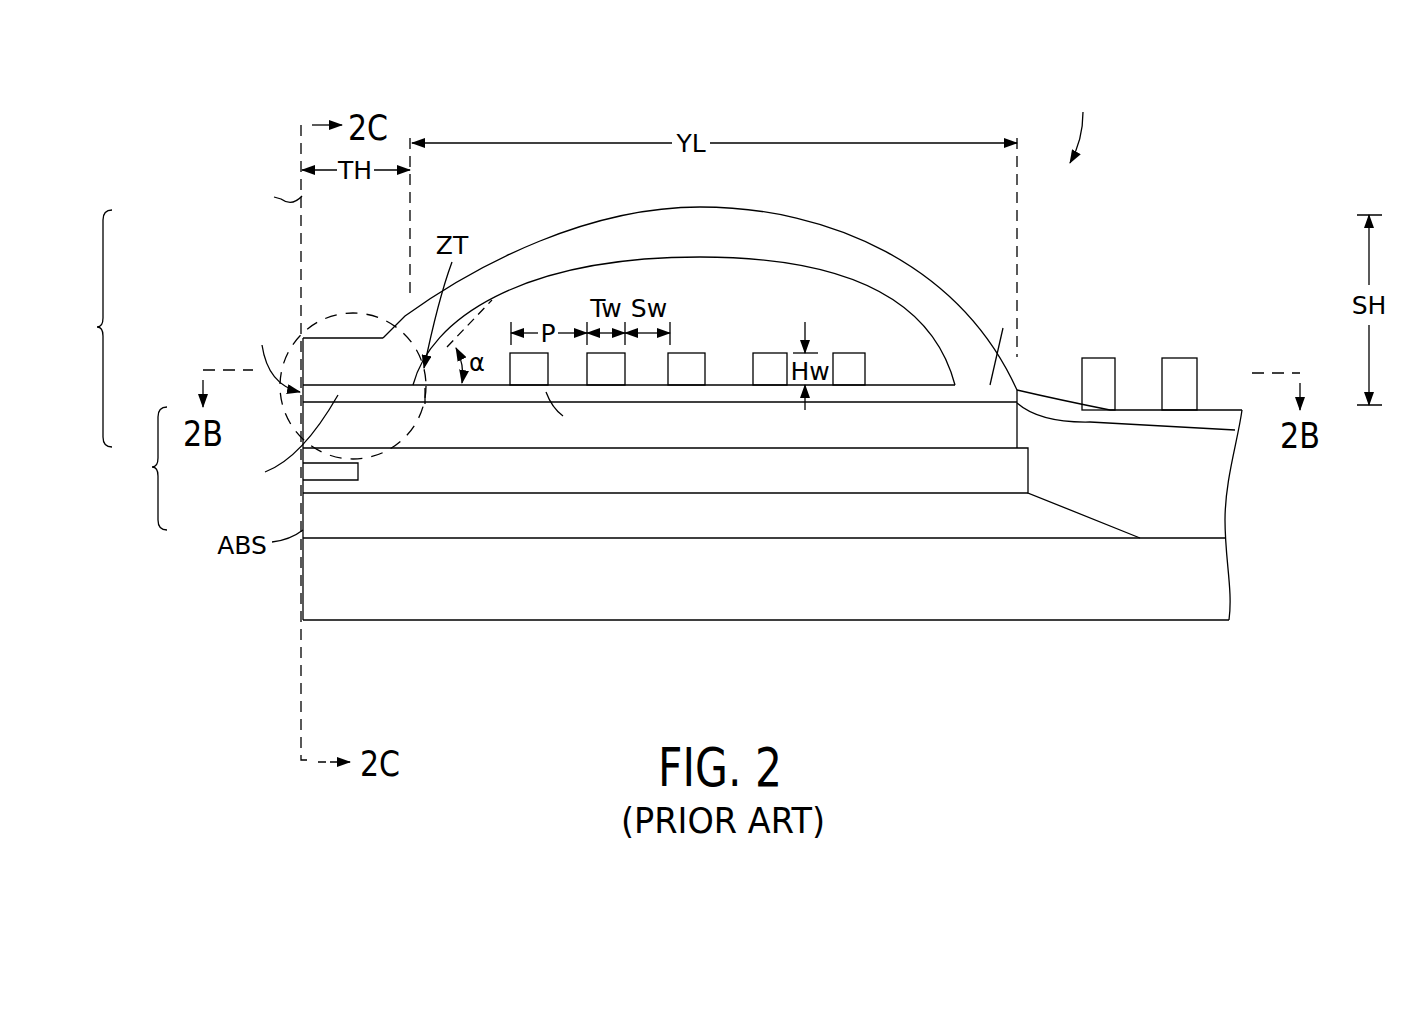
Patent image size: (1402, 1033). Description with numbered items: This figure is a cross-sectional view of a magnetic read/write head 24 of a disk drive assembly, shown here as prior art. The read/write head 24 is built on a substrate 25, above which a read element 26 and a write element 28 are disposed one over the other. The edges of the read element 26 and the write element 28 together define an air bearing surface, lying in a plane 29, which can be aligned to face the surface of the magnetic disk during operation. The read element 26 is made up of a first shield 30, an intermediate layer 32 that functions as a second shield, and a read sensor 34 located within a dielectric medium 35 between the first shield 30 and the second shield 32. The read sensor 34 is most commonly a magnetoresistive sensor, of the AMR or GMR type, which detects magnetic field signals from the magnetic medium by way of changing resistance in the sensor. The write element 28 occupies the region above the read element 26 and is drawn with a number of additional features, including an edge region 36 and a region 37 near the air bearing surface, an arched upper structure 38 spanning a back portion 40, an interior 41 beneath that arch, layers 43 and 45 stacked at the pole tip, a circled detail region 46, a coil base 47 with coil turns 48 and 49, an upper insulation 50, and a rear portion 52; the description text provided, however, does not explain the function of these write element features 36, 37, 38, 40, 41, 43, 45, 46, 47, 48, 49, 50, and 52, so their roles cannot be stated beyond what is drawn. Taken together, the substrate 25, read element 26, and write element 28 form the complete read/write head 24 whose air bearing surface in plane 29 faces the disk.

The magnetic read/write head 24 is at (1084, 122).
The substrate 25 is at (772, 479).
The read element 26 is at (137, 468).
The write element 28 is at (87, 328).
The plane 29 is at (270, 195).
The first shield 30 is at (665, 512).
The intermediate layer 32 is at (629, 412).
The read sensor 34 is at (358, 475).
The dielectric medium 35 is at (721, 493).
The pole tip edge 36 is at (270, 353).
The pole tip region 37 is at (284, 440).
The second pole piece yoke 38 is at (808, 238).
The back gap 40 is at (999, 341).
The insulation stack 41 is at (926, 246).
The first pole tip layer 43 is at (660, 421).
The second pole tip layer 45 is at (343, 358).
The pole tip region detail 46 is at (339, 300).
The coil layer base 47 is at (563, 420).
The coil layer 48 is at (707, 346).
The coil turn 49 is at (849, 360).
The insulation layer 50 is at (693, 282).
The back gap layer 52 is at (1129, 441).